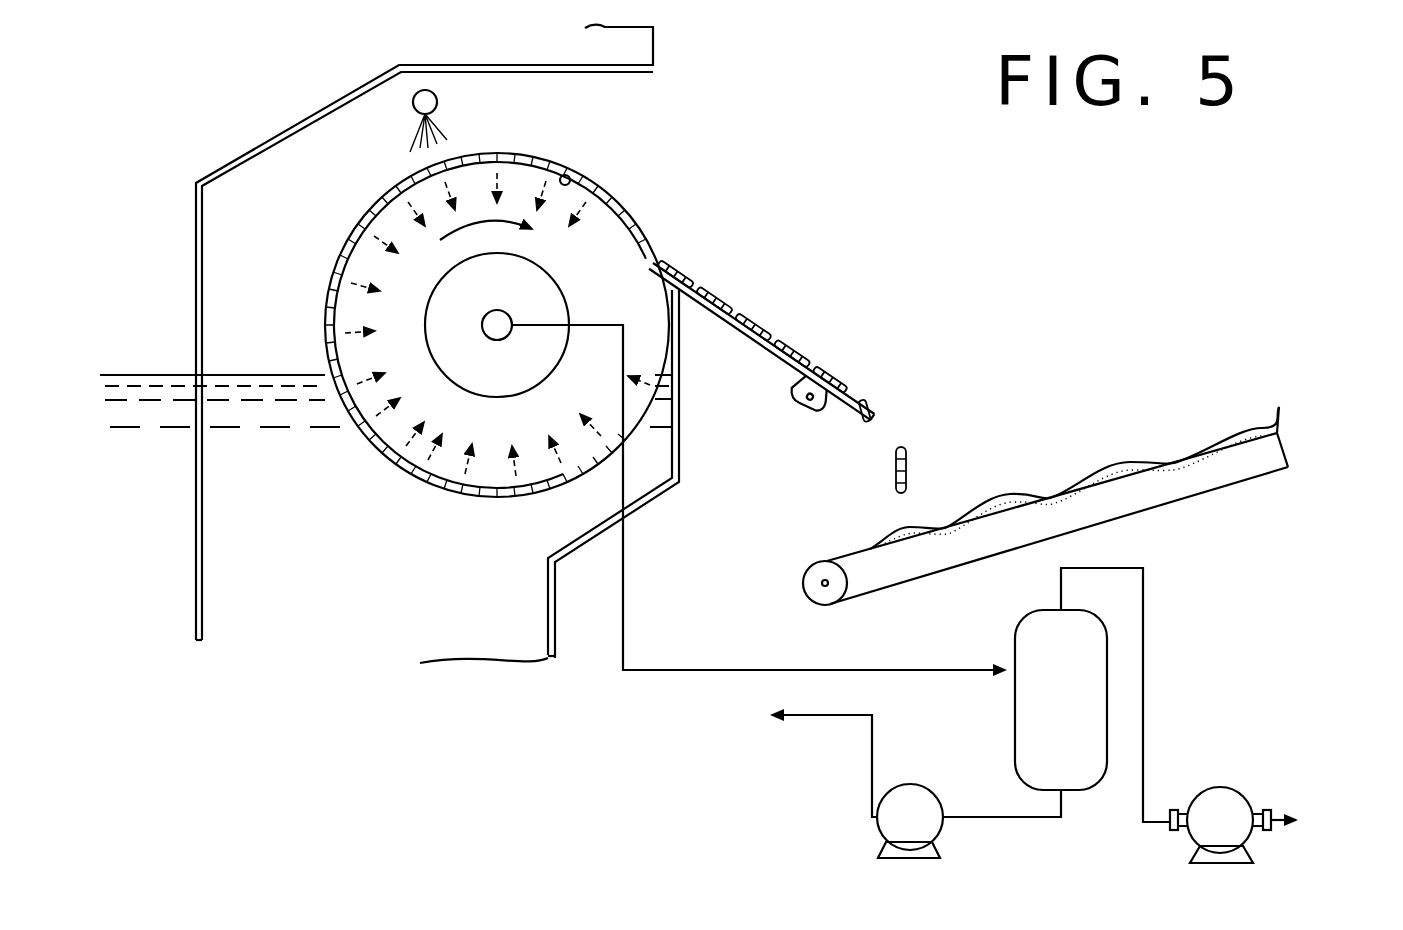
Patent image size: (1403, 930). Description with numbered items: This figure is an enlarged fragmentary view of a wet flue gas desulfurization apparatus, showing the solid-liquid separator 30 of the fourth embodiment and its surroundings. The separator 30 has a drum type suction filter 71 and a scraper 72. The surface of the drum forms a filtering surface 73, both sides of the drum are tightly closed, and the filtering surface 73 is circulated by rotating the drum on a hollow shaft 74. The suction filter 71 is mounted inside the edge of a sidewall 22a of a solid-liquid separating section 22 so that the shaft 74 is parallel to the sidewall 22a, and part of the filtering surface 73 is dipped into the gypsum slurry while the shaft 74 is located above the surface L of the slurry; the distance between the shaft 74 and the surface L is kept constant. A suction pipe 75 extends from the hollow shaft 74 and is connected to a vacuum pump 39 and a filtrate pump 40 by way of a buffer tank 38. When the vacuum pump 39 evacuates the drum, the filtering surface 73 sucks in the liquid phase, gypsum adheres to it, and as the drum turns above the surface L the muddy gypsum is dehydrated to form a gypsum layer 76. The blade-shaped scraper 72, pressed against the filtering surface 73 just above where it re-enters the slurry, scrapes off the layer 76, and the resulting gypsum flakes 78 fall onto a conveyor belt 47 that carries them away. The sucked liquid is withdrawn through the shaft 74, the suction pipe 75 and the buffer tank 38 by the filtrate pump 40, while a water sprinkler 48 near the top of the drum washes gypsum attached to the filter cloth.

The solid-liquid separating section 22 is at (648, 503).
The sidewall 22a is at (679, 458).
The surface of the gypsum slurry L is at (266, 375).
The solid-liquid separator 30 is at (722, 253).
The drum type suction filter 71 is at (605, 245).
The gypsum layer 76 is at (338, 248).
The filtering surface 73 is at (569, 175).
The hollow shaft 74 is at (498, 341).
The scraper 72 is at (848, 380).
The gypsum flakes 78 is at (740, 296).
The water sprinkler 48 is at (440, 103).
The suction pipe 75 is at (653, 672).
The conveyor belt 47 is at (1186, 457).
The buffer tank 38 is at (1107, 628).
The filtrate pump 40 is at (926, 788).
The vacuum pump 39 is at (1238, 788).